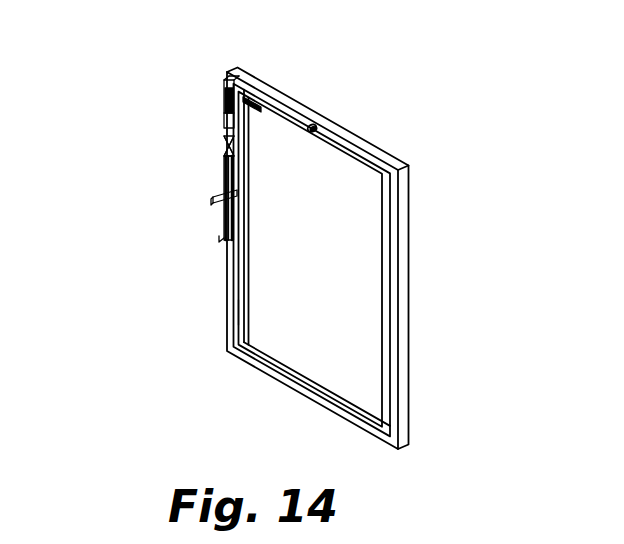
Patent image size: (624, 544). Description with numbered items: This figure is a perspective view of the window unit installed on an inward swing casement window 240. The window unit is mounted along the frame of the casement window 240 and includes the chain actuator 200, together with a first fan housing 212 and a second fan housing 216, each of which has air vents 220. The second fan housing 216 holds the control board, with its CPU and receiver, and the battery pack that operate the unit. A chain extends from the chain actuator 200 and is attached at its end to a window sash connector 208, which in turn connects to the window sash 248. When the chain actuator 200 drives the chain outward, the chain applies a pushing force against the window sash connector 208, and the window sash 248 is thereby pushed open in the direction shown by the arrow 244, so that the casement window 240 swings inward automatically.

The chain actuator 200 is at (138, 233).
The window sash connector 208 is at (204, 203).
The first fan housing 212 is at (213, 77).
The second fan housing 216 is at (394, 90).
The air vents 220 is at (148, 126).
The inward swing casement window 240 is at (367, 259).
The arrow 244 is at (348, 246).
The window sash 248 is at (161, 351).